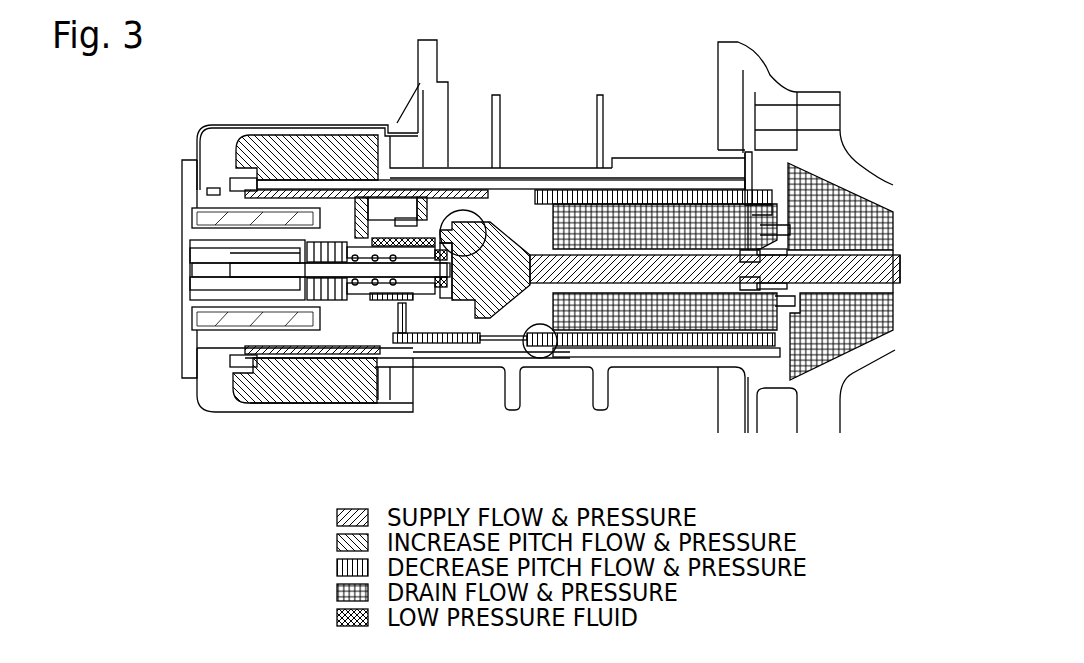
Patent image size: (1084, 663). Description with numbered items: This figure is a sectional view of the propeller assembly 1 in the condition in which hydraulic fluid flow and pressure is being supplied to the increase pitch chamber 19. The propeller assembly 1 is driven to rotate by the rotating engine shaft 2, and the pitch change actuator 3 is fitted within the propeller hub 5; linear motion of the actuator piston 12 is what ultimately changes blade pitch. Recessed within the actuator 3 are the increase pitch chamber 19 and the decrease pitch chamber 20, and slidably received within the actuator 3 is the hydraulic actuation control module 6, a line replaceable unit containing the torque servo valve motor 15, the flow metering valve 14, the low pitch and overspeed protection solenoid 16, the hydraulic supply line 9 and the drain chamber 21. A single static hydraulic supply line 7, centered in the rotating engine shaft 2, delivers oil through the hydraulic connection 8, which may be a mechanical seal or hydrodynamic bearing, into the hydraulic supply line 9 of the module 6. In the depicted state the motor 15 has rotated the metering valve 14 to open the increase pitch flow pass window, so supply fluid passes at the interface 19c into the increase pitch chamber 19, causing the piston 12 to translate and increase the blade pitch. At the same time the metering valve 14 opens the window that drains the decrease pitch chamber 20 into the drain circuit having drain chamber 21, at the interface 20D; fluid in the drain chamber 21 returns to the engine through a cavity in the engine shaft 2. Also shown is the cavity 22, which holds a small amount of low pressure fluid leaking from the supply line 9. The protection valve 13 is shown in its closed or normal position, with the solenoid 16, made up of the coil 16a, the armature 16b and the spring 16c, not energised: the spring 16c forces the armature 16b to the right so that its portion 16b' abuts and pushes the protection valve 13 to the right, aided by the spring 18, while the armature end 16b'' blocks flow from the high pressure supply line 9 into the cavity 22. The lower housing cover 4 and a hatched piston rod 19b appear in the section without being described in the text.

The propeller assembly 1 is at (766, 62).
The rotating engine shaft 2 is at (872, 362).
The pitch change actuator 3 is at (467, 162).
The lower housing cover 4 is at (225, 340).
The propeller hub 5 is at (438, 55).
The hydraulic actuation control module 6 is at (192, 346).
The static hydraulic supply line 7 is at (893, 275).
The hydraulic connection 8 is at (795, 307).
The hydraulic supply line 9 is at (723, 274).
The actuator piston 12 is at (431, 177).
The protection valve 13 is at (362, 300).
The flow metering valve 14 is at (444, 318).
The torque servo valve motor 15 is at (205, 214).
The low pitch and overspeed protection solenoid 16 is at (182, 260).
The coil 16a is at (200, 258).
The armature 16b is at (211, 300).
The armature portion 16b' is at (378, 383).
The armature end 16b'' is at (479, 347).
The spring 16c is at (355, 270).
The spring 18 is at (309, 290).
The increase pitch chamber 19 is at (325, 148).
The piston rod 19b is at (362, 205).
The increase pitch interface 19c is at (478, 215).
The decrease pitch chamber 20 is at (621, 192).
The drain interface 20D is at (542, 358).
The drain chamber 21 is at (630, 300).
The cavity 22 is at (440, 284).